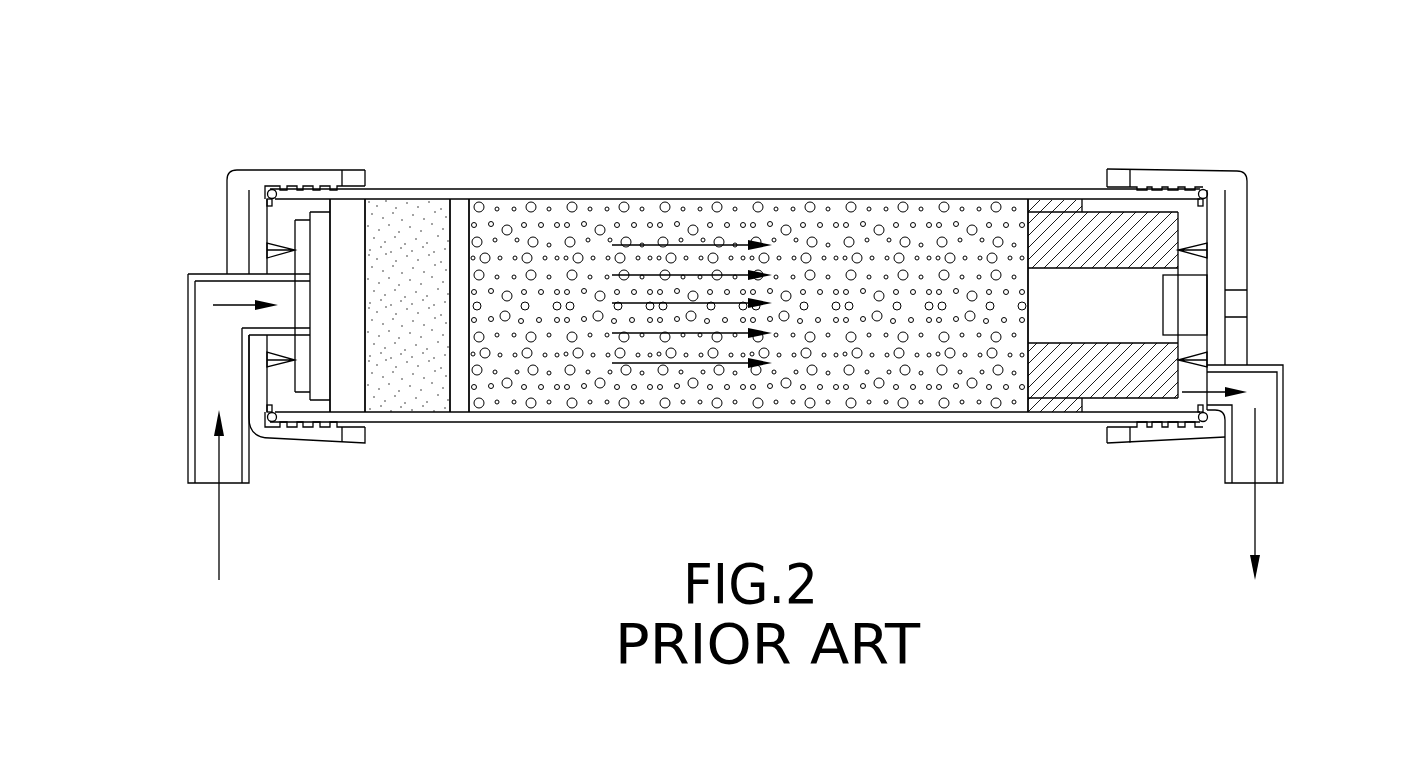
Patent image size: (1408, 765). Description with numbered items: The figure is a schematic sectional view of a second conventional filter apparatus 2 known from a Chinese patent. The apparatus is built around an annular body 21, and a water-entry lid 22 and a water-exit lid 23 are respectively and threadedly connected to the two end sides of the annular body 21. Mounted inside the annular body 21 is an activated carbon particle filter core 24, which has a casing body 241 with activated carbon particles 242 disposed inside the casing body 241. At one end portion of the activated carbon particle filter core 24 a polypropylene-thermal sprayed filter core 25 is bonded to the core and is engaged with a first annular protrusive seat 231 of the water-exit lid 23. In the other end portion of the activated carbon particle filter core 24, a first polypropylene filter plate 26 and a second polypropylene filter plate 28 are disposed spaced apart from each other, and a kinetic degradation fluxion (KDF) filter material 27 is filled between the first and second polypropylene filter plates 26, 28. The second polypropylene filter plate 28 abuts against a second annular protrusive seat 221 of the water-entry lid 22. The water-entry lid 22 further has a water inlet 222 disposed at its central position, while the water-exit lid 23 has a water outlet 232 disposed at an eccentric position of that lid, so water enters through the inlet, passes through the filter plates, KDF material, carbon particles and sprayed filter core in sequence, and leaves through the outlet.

The second conventional filter apparatus 2 is at (770, 165).
The annular body 21 is at (681, 192).
The water-entry lid 22 is at (240, 172).
The second annular protrusive seat 221 is at (298, 233).
The water inlet 222 is at (244, 290).
The water-exit lid 23 is at (1177, 176).
The first annular protrusive seat 231 is at (1195, 290).
The water outlet 232 is at (1268, 432).
The activated carbon particle filter core 24 is at (828, 183).
The casing body 241 is at (882, 200).
The activated carbon particles 242 is at (963, 222).
The polypropylene-thermal sprayed filter core 25 is at (1058, 218).
The first polypropylene filter plate 26 is at (460, 215).
The kinetic degradation fluxion (KDF) filter material 27 is at (402, 208).
The second polypropylene filter plate 28 is at (348, 215).